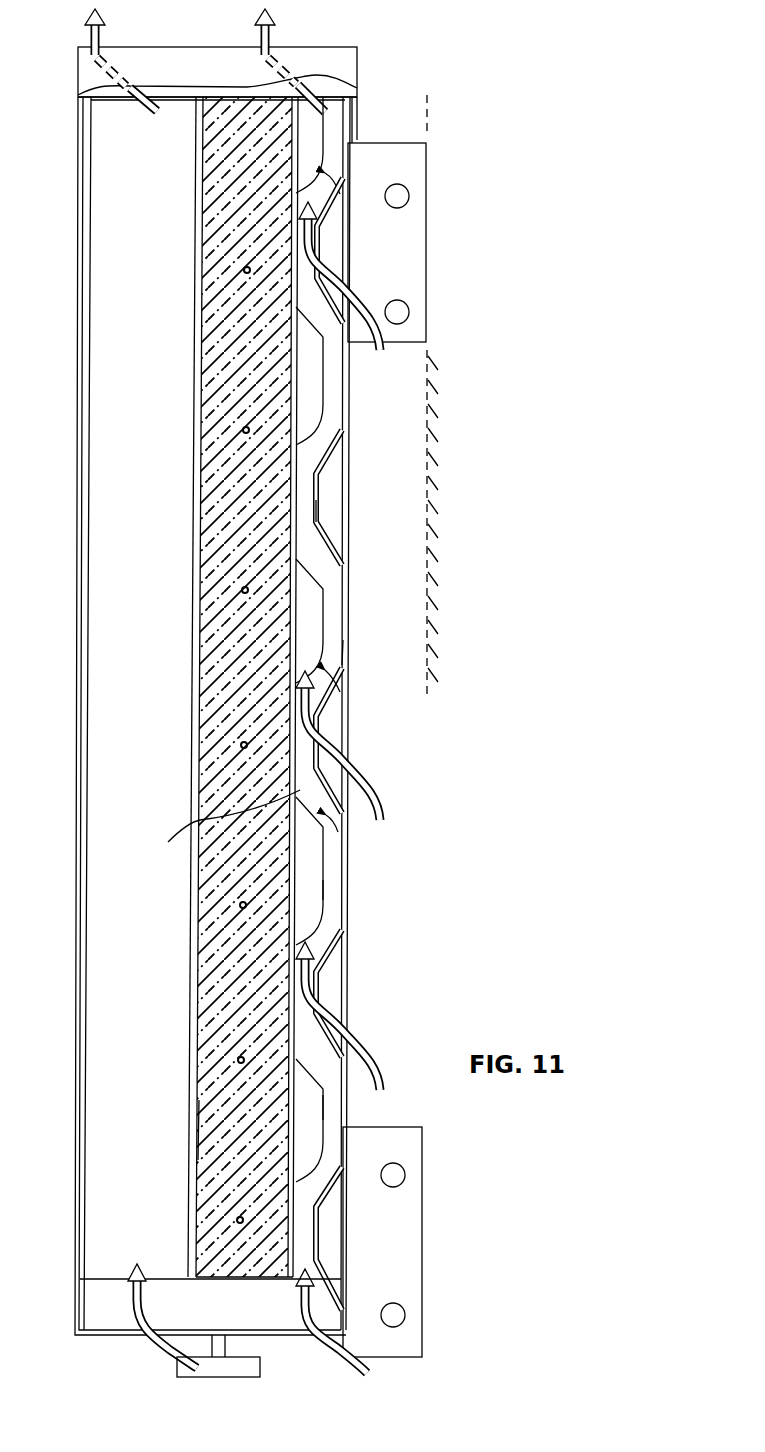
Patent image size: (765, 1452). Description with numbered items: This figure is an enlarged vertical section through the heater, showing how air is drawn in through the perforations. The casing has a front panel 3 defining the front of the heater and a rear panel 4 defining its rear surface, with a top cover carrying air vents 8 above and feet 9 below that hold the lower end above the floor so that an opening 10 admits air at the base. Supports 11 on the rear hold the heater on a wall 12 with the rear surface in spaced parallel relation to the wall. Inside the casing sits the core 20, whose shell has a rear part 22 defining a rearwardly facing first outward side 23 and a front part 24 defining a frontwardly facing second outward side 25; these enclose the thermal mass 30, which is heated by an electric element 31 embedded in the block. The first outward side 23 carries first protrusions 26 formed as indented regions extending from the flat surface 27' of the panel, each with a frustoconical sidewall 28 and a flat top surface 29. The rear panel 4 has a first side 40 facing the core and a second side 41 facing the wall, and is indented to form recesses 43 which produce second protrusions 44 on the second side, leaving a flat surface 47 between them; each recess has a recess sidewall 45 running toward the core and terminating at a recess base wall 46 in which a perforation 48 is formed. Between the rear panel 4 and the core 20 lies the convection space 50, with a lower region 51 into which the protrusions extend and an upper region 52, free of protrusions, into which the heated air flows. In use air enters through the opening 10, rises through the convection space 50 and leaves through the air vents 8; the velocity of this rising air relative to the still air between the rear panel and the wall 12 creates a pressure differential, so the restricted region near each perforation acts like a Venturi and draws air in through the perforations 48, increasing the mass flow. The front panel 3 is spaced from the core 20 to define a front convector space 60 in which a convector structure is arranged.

The front panel 3 is at (78, 681).
The rear panel 4 is at (350, 613).
The air vents 8 is at (350, 68).
The feet 9 is at (178, 1369).
The opening 10 is at (279, 1322).
The supports 11 is at (423, 267).
The wall 12 is at (427, 509).
The core 20 is at (186, 432).
The rear part 22 is at (300, 158).
The first outward side 23 is at (305, 871).
The front part 24 is at (197, 935).
The second outward side 25 is at (176, 806).
The first protrusions 26 is at (330, 423).
The flat surface 27' is at (411, 1115).
The frustoconical sidewall 28 is at (330, 938).
The flat top surface 29 is at (330, 881).
The thermal mass 30 is at (204, 1127).
The electric element 31 is at (242, 586).
The first side 40 is at (362, 652).
The second side 41 is at (336, 621).
The recesses 43 is at (347, 980).
The second protrusions 44 is at (330, 1149).
The recess sidewall 45 is at (335, 451).
The recess base wall 46 is at (325, 513).
The flat surface 47 is at (300, 1019).
The perforation 48 is at (323, 236).
The convection space 50 is at (333, 690).
The lower region 51 is at (335, 821).
The upper region 52 is at (343, 191).
The front convector space 60 is at (134, 514).